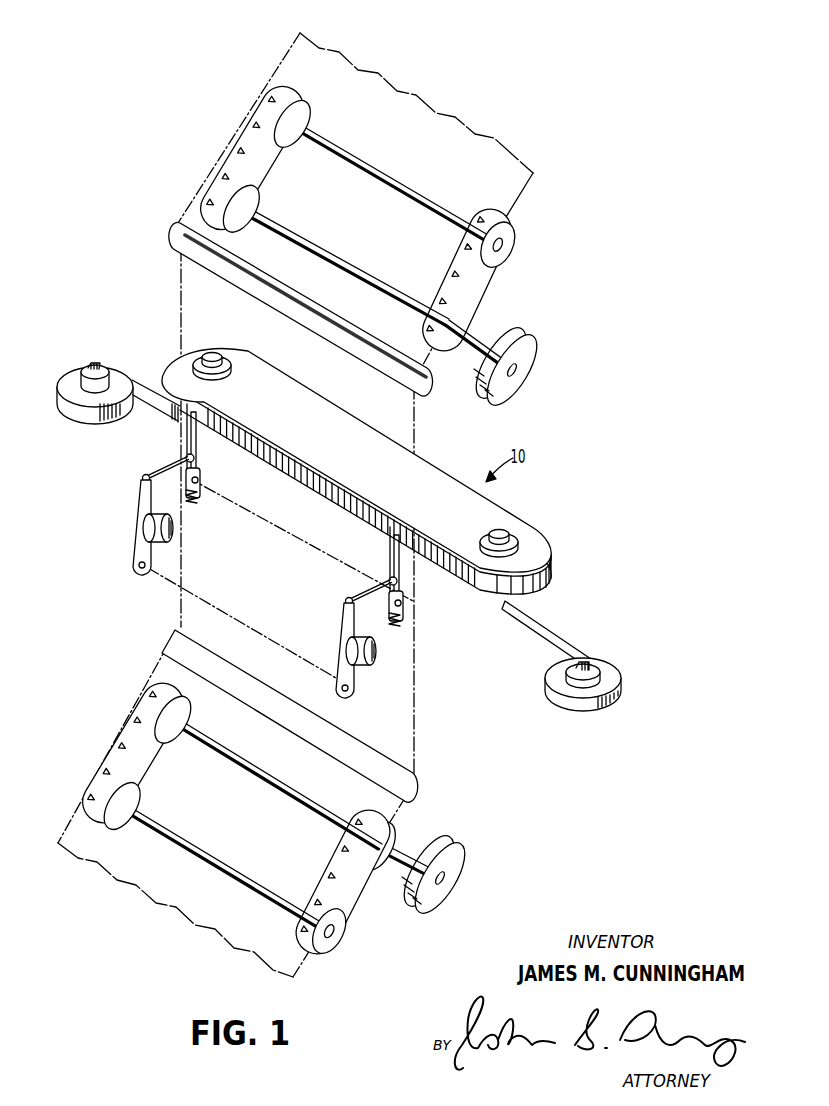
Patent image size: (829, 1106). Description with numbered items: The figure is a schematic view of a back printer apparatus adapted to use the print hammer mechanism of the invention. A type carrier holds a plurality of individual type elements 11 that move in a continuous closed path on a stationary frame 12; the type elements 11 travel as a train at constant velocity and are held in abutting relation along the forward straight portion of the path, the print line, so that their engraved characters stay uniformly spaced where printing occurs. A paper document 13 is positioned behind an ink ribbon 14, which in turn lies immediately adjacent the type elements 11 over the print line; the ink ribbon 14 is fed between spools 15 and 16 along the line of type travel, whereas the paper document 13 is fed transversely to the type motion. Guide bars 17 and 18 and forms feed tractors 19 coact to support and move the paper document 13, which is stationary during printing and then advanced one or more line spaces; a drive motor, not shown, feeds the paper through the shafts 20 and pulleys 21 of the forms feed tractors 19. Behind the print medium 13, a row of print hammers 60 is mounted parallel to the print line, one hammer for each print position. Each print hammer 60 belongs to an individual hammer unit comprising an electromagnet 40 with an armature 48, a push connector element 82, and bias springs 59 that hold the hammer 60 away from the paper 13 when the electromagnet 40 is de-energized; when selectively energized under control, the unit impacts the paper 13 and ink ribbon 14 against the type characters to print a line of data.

The type elements 11 is at (323, 486).
The stationary frame 12 is at (527, 532).
The paper document 13 is at (490, 147).
The ink ribbon 14 is at (545, 632).
The spool 15 is at (553, 683).
The spool 16 is at (78, 400).
The guide bar 17 is at (363, 753).
The guide bar 18 is at (429, 392).
The forms feed tractors 19 is at (522, 241).
The shaft 20 is at (471, 337).
The pulley 21 is at (530, 362).
The electromagnet 40 is at (166, 546).
The armature 48 is at (137, 547).
The bias spring 59 is at (190, 503).
The print hammer 60 is at (204, 463).
The push connector element 82 is at (172, 463).